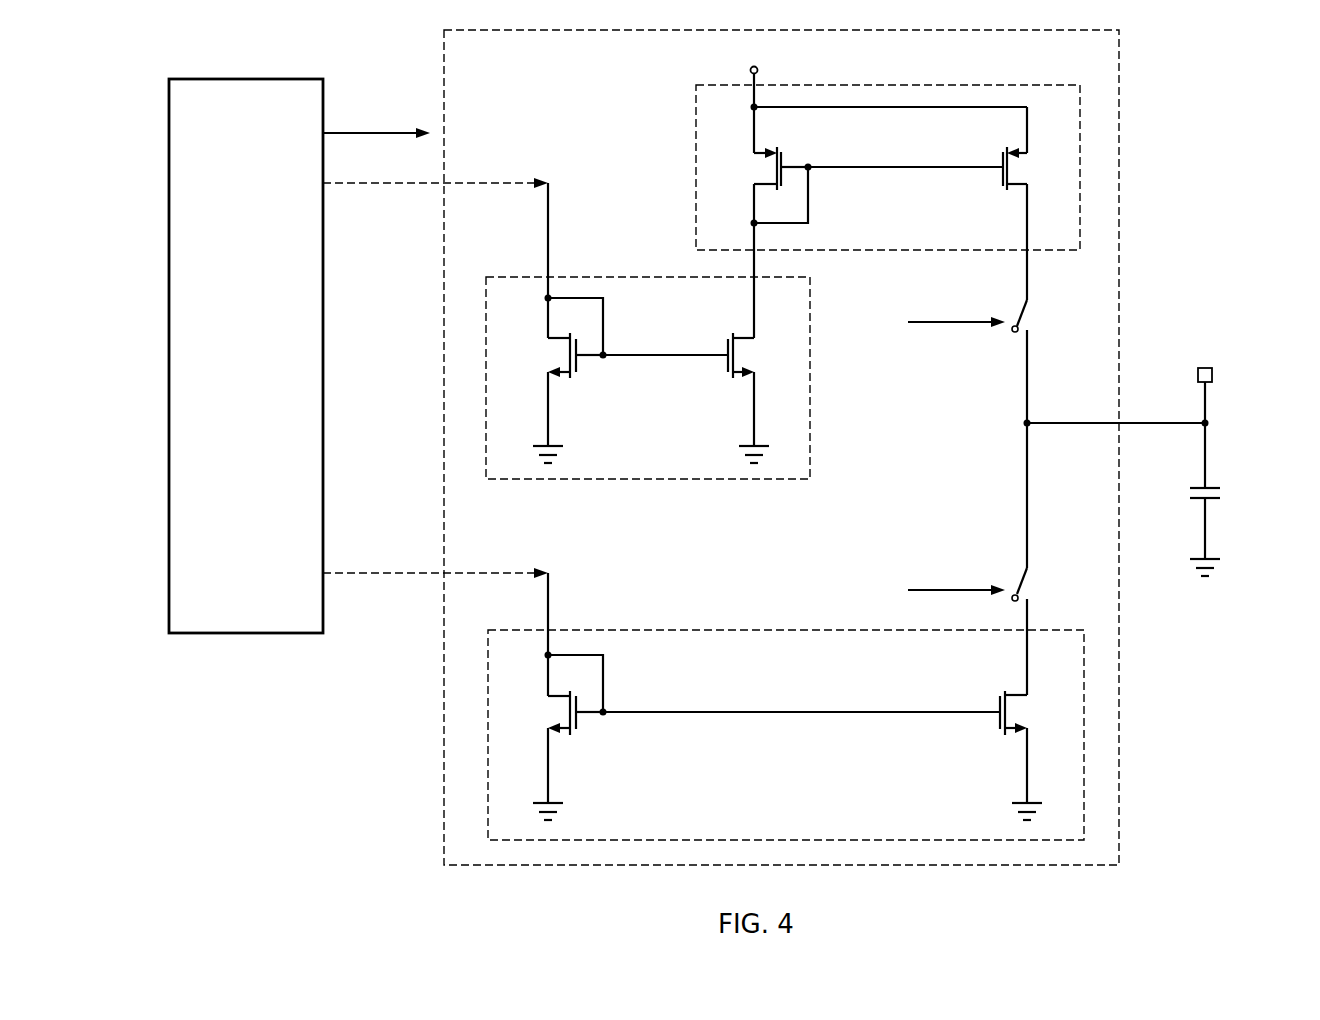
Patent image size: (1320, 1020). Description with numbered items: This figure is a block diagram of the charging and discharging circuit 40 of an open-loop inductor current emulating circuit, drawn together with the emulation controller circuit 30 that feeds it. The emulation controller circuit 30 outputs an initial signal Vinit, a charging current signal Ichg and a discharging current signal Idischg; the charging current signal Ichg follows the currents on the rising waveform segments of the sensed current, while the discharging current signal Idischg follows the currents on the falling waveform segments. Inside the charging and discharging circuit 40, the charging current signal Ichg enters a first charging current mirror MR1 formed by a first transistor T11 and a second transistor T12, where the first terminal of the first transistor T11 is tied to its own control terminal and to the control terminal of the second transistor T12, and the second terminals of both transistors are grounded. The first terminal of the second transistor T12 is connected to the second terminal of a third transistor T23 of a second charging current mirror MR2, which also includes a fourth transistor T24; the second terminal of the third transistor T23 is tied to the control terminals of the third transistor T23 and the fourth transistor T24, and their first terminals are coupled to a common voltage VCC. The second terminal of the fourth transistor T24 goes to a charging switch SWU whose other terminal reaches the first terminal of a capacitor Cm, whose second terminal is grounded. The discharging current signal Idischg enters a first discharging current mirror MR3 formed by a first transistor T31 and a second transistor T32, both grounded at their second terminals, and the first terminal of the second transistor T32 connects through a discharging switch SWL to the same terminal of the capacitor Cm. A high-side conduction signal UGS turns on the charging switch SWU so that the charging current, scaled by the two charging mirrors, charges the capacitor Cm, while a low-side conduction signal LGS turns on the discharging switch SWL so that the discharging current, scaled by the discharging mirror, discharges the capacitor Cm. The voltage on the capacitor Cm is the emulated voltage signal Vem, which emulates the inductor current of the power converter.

The emulation controller circuit 30 is at (244, 78).
The charging and discharging circuit 40 is at (1119, 72).
The first charging current mirror MR1 is at (648, 358).
The second charging current mirror MR2 is at (888, 171).
The first discharging current mirror MR3 is at (786, 706).
The first transistor T11 is at (549, 398).
The second transistor T12 is at (766, 398).
The third transistor T23 is at (759, 168).
The fourth transistor T24 is at (1038, 168).
The first transistor T31 is at (553, 755).
The second transistor T32 is at (1039, 755).
The charging switch SWU is at (1052, 303).
The discharging switch SWL is at (1050, 559).
The capacitor Cm is at (1229, 499).
The common voltage VCC is at (754, 71).
The emulated voltage signal Vem is at (1203, 380).
The initial signal Vinit is at (376, 120).
The charging current signal Ichg is at (435, 167).
The discharging current signal Idischg is at (435, 557).
The high-side conduction signal UGS is at (956, 308).
The low-side conduction signal LGS is at (956, 576).